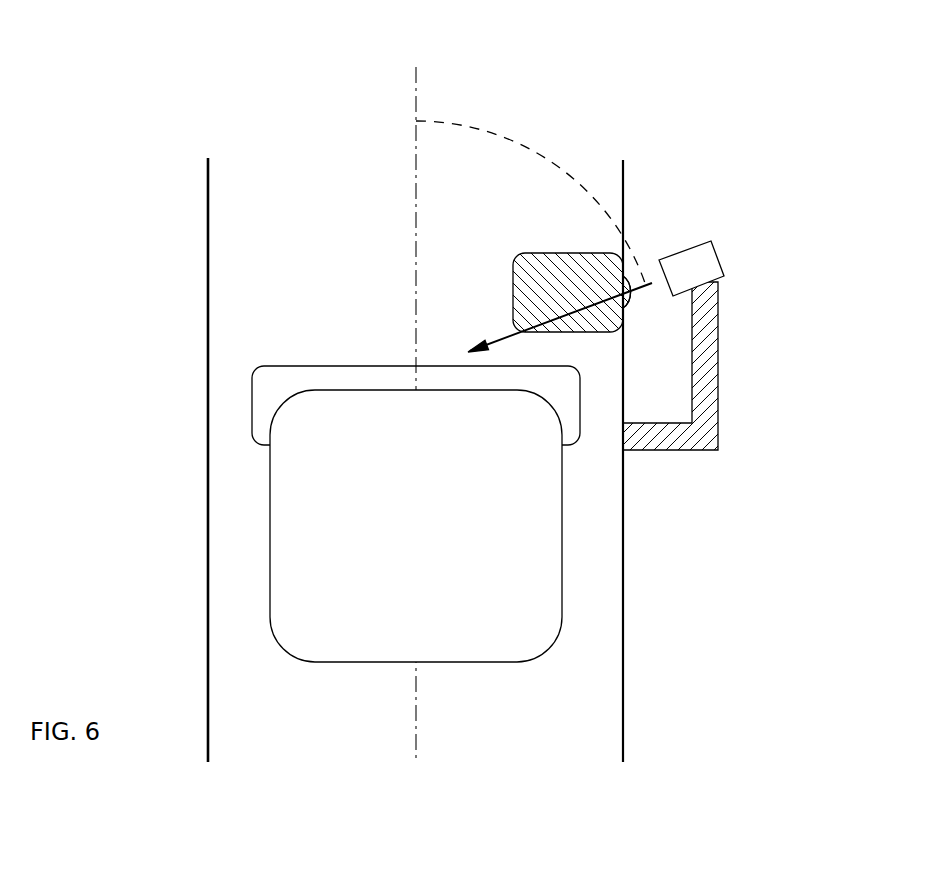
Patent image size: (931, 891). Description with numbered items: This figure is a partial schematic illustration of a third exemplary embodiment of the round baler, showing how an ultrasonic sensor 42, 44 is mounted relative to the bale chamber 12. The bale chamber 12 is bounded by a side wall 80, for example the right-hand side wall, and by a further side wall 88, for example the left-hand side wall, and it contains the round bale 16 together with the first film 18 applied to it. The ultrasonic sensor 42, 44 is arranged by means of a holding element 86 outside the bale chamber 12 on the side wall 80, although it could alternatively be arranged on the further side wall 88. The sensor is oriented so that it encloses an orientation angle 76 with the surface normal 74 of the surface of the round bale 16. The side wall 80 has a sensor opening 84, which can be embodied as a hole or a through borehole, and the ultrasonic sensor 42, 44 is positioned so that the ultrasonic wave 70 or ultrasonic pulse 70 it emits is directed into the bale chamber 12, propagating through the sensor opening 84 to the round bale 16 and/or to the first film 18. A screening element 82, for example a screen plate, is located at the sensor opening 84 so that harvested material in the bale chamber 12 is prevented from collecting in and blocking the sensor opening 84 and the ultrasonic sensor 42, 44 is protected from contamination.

The bale chamber 12 is at (308, 734).
The round bale 16 is at (372, 537).
The first film 18 is at (278, 387).
The ultrasonic sensor 42 is at (714, 232).
The ultrasonic sensor 44 is at (700, 258).
The ultrasonic wave 70 is at (505, 330).
The surface normal 74 is at (416, 187).
The orientation angle 76 is at (490, 124).
The side wall 80 is at (623, 636).
The screening element 82 is at (536, 285).
The sensor opening 84 is at (634, 318).
The holding element 86 is at (710, 388).
The further side wall 88 is at (208, 643).